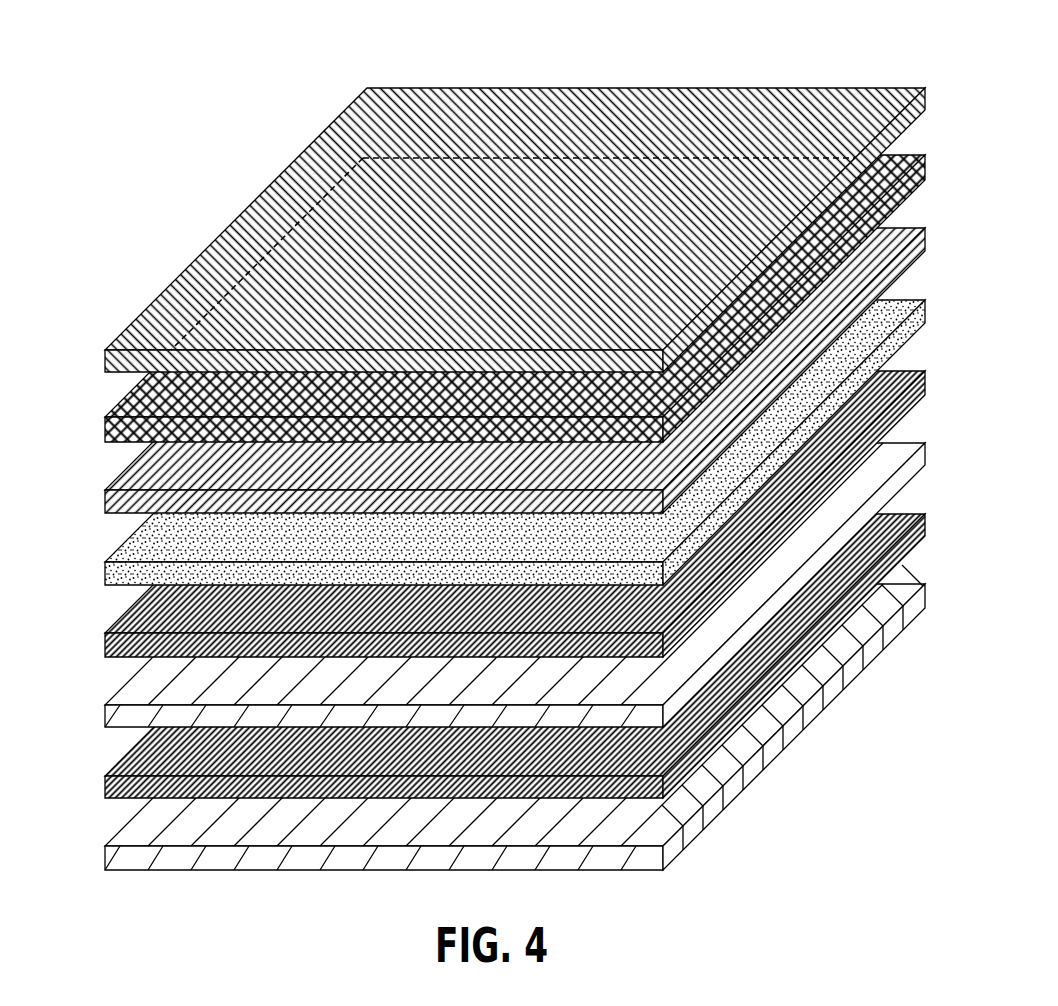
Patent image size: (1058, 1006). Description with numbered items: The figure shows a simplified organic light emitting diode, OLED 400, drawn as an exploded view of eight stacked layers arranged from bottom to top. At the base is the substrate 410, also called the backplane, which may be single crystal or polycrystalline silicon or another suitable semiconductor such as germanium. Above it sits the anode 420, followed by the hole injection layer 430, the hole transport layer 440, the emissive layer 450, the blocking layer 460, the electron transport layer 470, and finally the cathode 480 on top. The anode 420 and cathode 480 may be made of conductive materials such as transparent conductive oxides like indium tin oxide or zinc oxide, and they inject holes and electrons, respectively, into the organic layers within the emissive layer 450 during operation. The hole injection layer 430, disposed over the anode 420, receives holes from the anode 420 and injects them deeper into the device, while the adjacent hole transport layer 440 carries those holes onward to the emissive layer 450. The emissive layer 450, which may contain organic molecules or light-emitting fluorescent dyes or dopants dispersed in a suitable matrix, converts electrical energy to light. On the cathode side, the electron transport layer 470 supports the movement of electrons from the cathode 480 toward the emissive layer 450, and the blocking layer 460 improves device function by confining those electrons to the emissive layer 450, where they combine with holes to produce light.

The OLED 400 is at (159, 78).
The substrate 410 is at (103, 858).
The anode 420 is at (103, 788).
The hole injection layer 430 is at (103, 717).
The hole transport layer 440 is at (103, 645).
The emissive layer 450 is at (103, 574).
The blocking layer 460 is at (103, 502).
The electron transport layer 470 is at (103, 429).
The cathode 480 is at (103, 362).